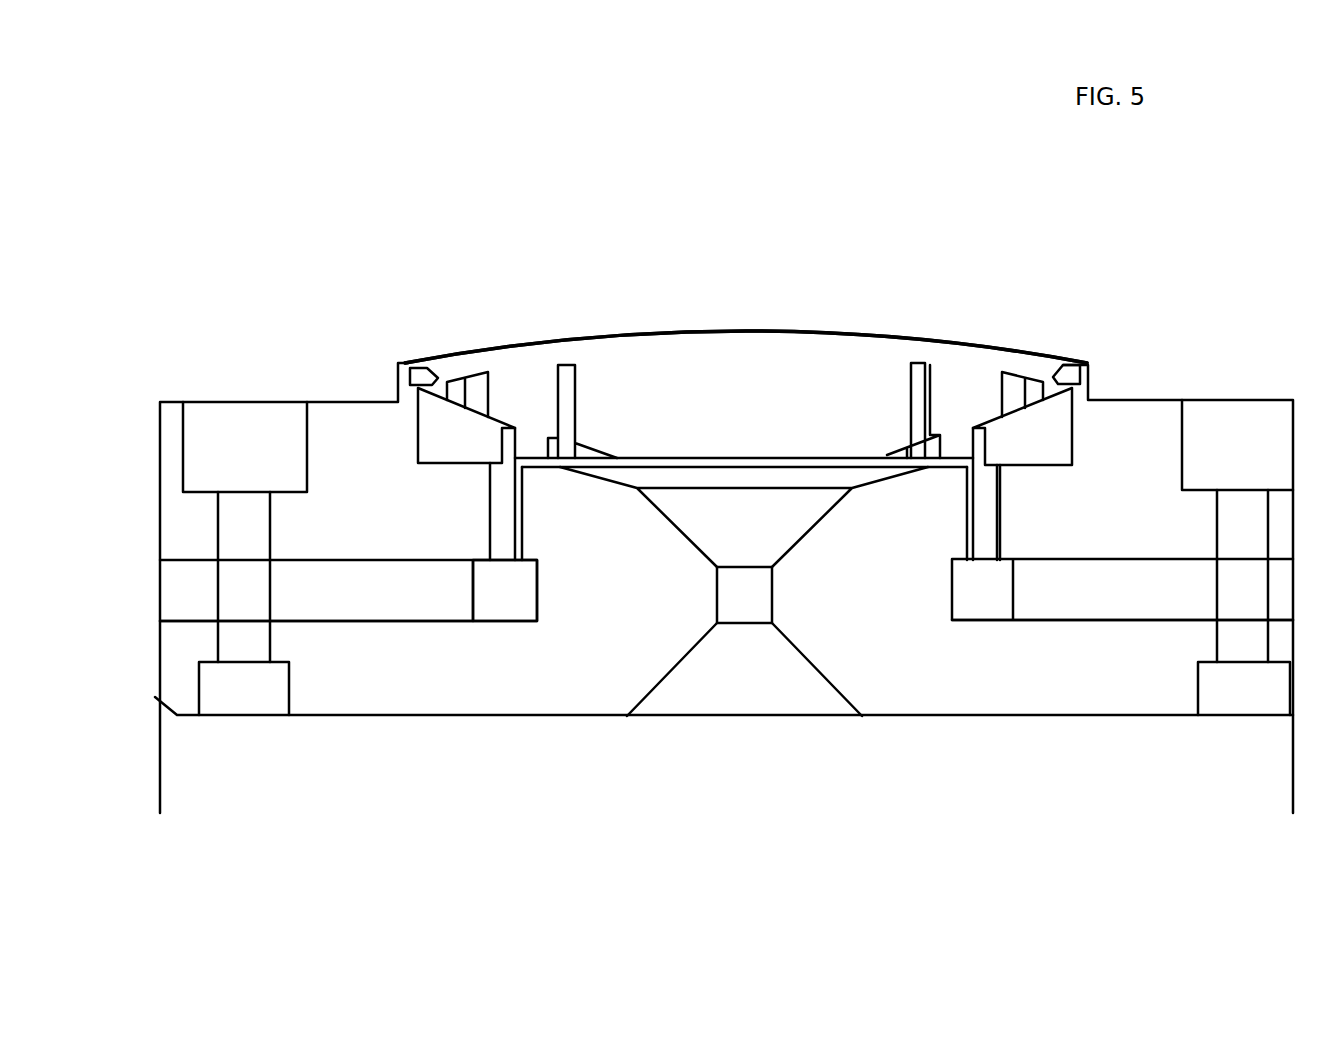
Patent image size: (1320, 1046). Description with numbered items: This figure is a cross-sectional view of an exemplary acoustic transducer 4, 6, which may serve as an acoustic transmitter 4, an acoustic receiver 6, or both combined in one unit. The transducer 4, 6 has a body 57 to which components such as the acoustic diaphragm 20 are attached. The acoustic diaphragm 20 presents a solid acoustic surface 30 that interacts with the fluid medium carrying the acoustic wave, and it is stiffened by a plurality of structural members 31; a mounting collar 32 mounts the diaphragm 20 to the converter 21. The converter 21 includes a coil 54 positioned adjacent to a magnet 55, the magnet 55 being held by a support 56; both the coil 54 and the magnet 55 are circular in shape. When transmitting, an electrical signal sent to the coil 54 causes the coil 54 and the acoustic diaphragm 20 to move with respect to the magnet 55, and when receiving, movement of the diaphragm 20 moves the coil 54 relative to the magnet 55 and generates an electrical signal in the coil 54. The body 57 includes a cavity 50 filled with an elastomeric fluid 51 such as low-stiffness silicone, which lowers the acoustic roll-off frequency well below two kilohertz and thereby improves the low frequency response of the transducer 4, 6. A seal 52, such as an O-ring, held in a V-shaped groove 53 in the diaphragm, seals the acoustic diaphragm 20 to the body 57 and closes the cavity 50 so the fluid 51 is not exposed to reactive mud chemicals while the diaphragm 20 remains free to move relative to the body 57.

The acoustic transmitter 4 is at (422, 218).
The acoustic receiver 6 is at (422, 218).
The acoustic diaphragm 20 is at (788, 332).
The converter 21 is at (408, 612).
The acoustic surface 30 is at (537, 343).
The structural members 31 is at (585, 398).
The mounting collar 32 is at (962, 448).
The cavity 50 is at (697, 642).
The elastomeric fluid 51 is at (768, 650).
The seal 52 is at (1080, 363).
The groove 53 is at (1065, 385).
The coil 54 is at (505, 518).
The magnet 55 is at (492, 598).
The support 56 is at (310, 598).
The body 57 is at (987, 682).